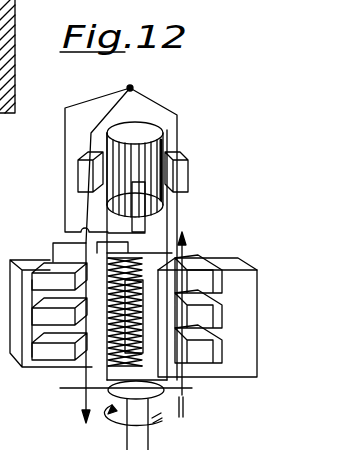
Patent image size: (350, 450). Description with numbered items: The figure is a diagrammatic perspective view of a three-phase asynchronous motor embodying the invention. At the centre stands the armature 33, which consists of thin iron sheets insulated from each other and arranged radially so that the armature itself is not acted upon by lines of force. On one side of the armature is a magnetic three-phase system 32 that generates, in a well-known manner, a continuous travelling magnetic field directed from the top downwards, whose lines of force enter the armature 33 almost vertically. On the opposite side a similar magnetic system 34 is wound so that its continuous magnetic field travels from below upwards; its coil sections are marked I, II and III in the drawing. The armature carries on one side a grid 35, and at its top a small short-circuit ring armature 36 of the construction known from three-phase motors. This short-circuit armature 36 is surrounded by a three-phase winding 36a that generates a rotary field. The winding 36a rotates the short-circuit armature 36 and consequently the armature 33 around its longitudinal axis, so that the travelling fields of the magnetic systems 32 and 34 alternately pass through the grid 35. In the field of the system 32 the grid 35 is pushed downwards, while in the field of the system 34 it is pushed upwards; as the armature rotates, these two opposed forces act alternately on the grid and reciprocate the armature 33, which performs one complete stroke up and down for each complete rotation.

The magnetic three-phase system 32 is at (30, 263).
The armature 33 is at (160, 223).
The magnetic system 34 is at (216, 331).
The grid 35 is at (132, 268).
The short-circuit ring armature 36 is at (157, 130).
The three-phase winding 36a is at (188, 168).
The first coil I is at (257, 368).
The second coil II is at (222, 333).
The third coil III is at (222, 292).